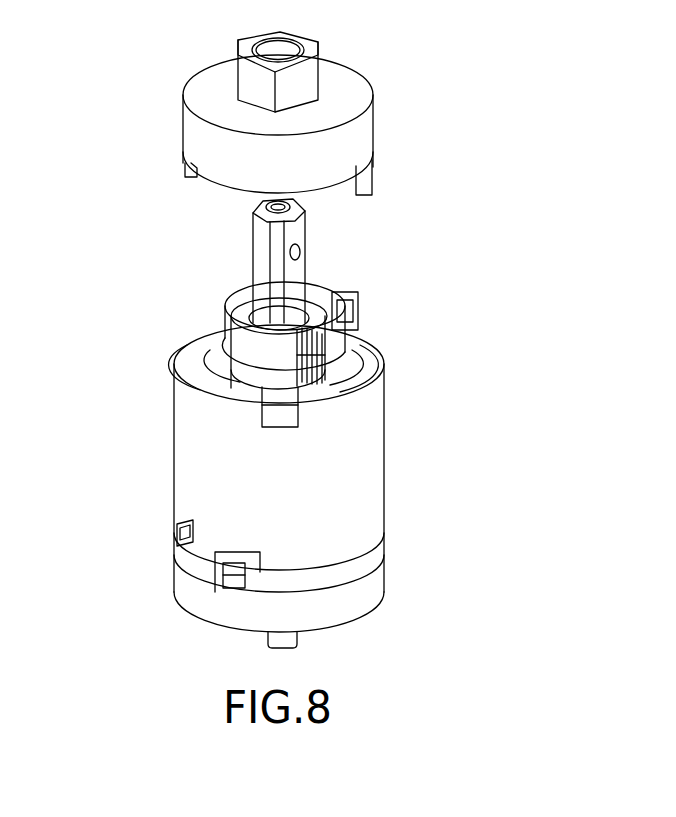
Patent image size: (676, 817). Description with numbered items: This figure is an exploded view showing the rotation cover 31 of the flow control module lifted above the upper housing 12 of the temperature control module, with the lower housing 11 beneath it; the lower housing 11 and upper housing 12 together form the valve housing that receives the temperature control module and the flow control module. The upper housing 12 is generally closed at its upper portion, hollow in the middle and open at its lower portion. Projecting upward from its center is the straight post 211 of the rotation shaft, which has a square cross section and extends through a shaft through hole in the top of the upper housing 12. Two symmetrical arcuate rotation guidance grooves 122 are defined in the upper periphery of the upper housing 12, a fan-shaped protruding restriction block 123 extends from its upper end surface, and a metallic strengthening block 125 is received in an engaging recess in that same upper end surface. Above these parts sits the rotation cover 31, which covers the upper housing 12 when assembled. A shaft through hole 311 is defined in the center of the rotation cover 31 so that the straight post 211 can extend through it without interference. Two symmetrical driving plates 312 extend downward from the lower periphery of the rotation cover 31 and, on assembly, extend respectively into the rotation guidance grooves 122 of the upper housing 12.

The lower housing 11 is at (383, 575).
The upper housing 12 is at (275, 452).
The rotation guidance grooves 122 is at (280, 322).
The restriction block 123 is at (350, 295).
The metallic strengthening block 125 is at (277, 417).
The straight post 211 is at (298, 270).
The rotation cover 31 is at (295, 123).
The shaft through hole 311 is at (280, 50).
The driving plates 312 is at (366, 190).